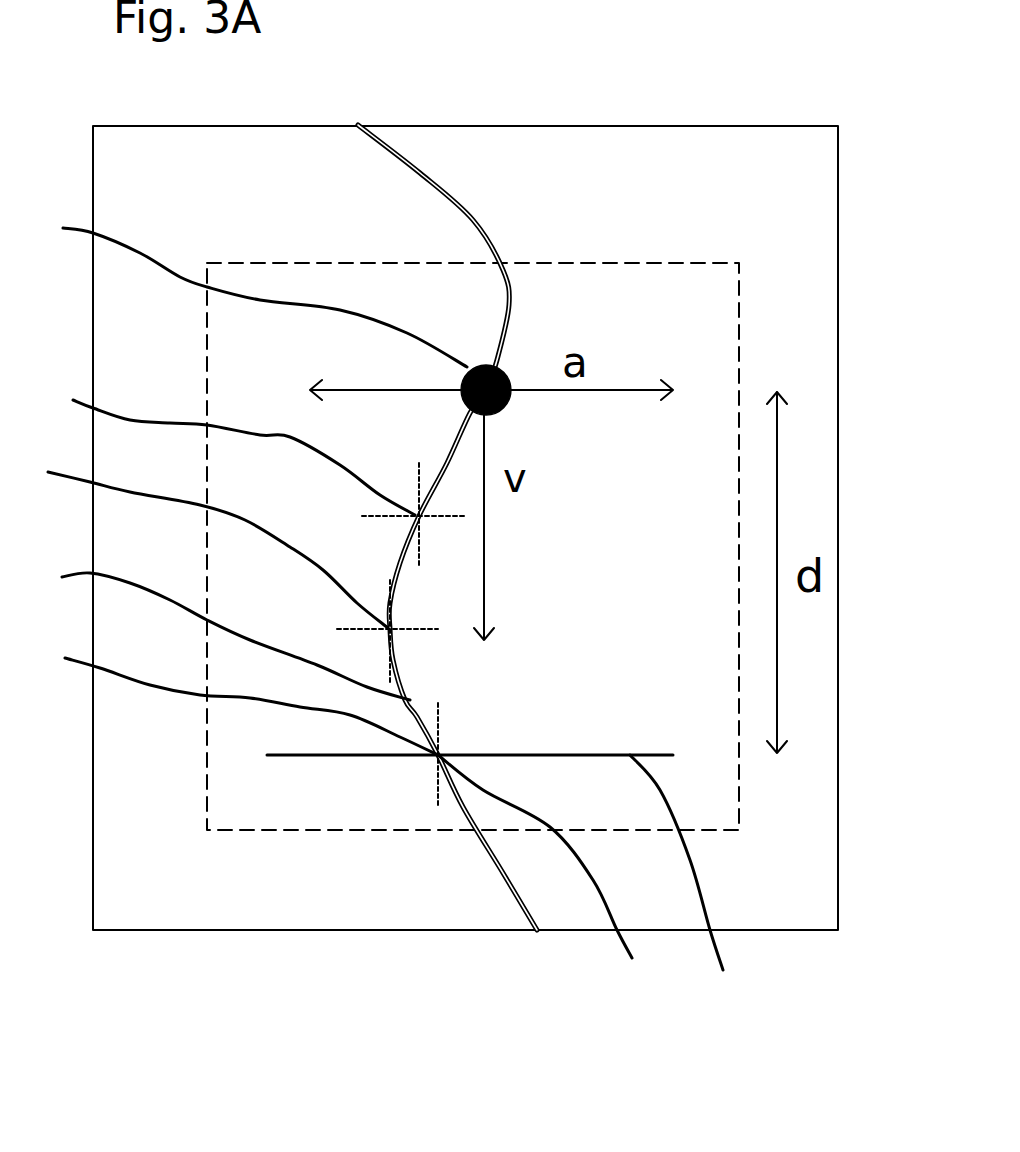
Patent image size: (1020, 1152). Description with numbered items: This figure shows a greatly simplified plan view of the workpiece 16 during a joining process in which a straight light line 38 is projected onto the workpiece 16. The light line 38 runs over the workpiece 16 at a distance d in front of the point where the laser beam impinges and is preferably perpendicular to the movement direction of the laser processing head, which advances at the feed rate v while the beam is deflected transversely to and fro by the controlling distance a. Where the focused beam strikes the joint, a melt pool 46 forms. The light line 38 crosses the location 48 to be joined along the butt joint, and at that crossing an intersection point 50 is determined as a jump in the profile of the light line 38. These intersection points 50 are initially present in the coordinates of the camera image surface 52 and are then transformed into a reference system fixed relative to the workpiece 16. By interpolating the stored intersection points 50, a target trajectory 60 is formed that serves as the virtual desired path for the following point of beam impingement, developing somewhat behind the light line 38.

The workpiece 16 is at (638, 138).
The image surface 52 is at (665, 262).
The melt pool 46 is at (243, 292).
The intersection point 50 is at (221, 567).
The target trajectory 60 is at (207, 630).
The location to be joined 48 is at (555, 881).
The light line 38 is at (697, 886).